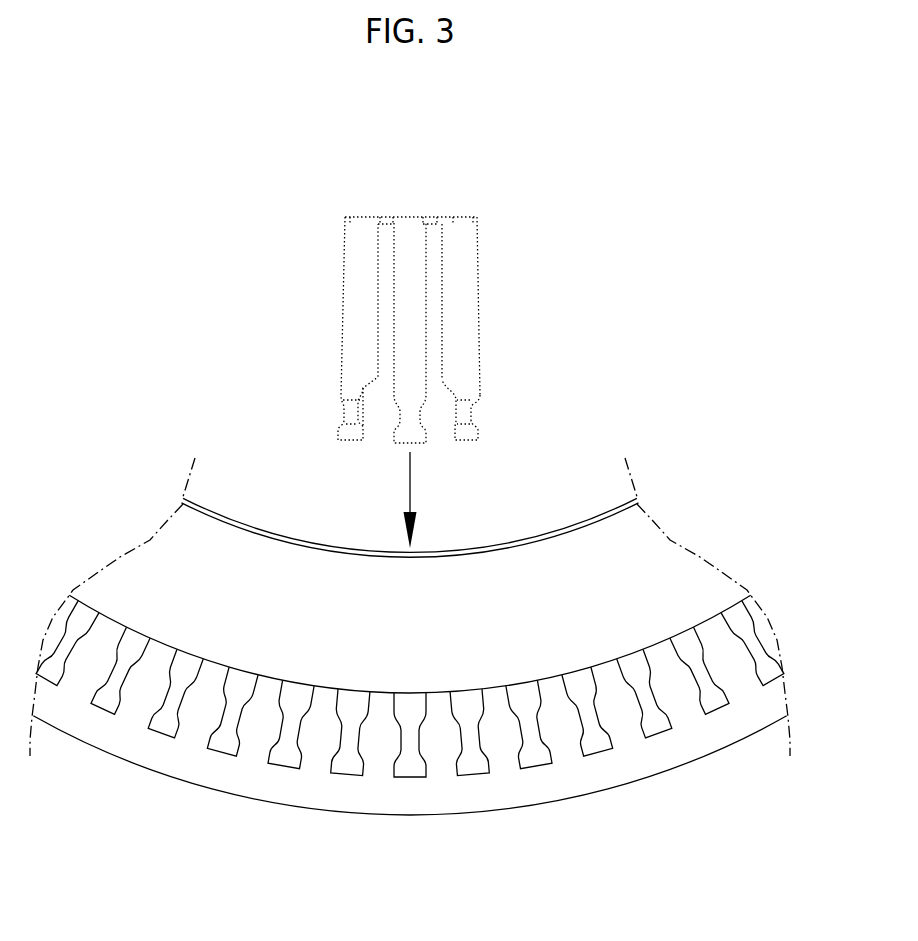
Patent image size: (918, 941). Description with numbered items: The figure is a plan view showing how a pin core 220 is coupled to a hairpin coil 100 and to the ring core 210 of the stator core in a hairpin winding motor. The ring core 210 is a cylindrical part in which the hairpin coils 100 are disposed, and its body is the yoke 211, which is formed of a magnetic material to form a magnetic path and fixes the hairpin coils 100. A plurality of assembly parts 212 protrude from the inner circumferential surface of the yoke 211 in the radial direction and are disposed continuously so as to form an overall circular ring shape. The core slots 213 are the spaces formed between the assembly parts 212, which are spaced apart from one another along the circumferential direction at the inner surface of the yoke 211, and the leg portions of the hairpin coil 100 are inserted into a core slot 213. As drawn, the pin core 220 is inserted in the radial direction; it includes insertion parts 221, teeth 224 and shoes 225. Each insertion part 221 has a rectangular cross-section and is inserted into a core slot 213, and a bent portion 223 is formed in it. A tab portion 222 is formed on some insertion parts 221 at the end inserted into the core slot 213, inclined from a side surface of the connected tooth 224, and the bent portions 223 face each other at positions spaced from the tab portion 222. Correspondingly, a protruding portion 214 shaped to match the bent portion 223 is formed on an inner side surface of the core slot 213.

The hairpin coil 100 is at (647, 587).
The ring core 210 is at (146, 794).
The yoke 211 is at (303, 790).
The assembly part 212 is at (385, 708).
The core slot 213 is at (487, 770).
The protruding portion 214 is at (481, 735).
The pin core 220 is at (335, 181).
The insertion part 221 is at (473, 433).
The tab portion 222 is at (333, 427).
The bent portion 223 is at (355, 412).
The tooth 224 is at (467, 305).
The shoe 225 is at (430, 218).